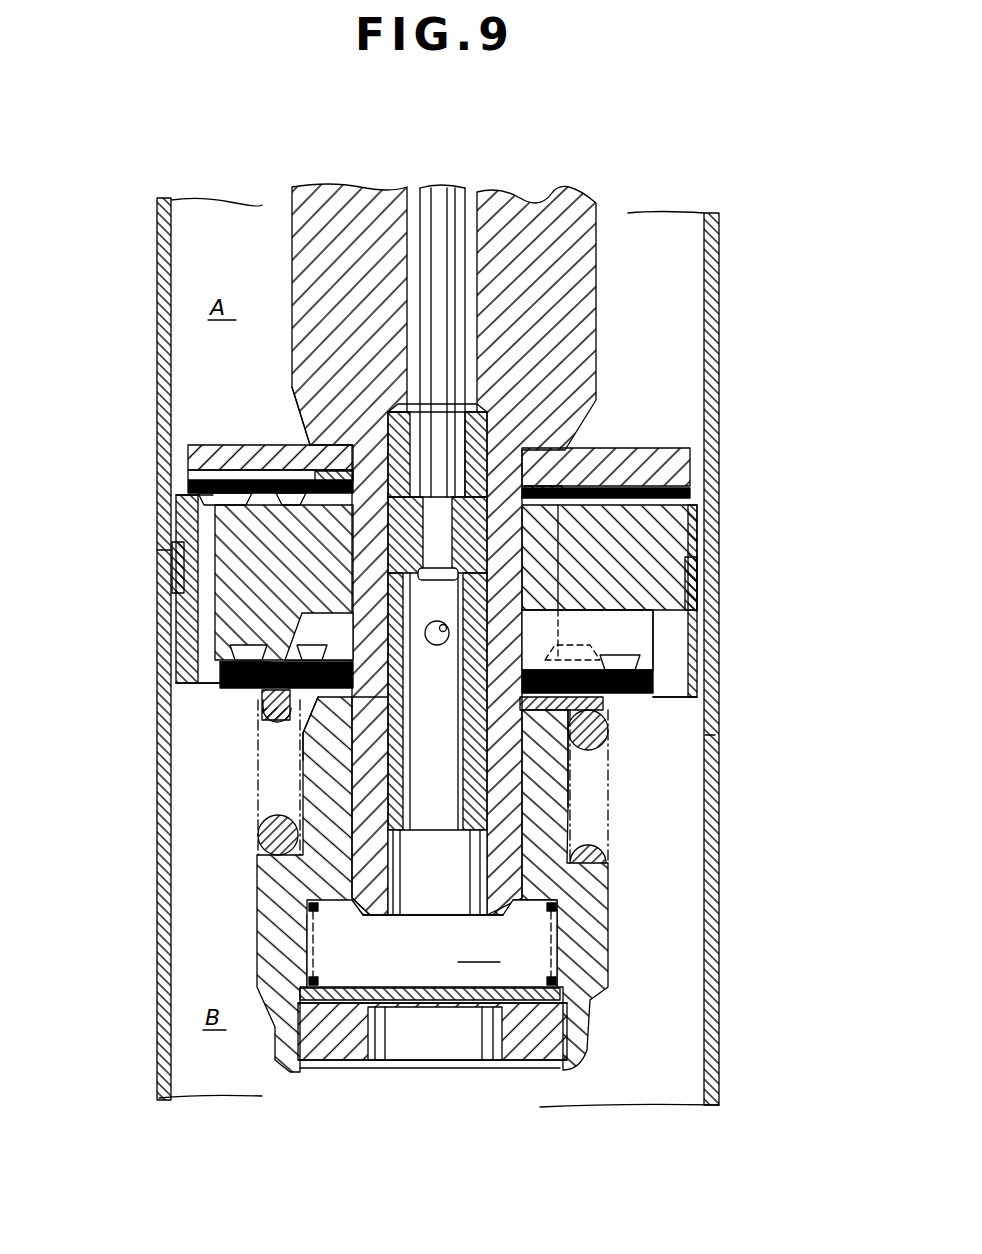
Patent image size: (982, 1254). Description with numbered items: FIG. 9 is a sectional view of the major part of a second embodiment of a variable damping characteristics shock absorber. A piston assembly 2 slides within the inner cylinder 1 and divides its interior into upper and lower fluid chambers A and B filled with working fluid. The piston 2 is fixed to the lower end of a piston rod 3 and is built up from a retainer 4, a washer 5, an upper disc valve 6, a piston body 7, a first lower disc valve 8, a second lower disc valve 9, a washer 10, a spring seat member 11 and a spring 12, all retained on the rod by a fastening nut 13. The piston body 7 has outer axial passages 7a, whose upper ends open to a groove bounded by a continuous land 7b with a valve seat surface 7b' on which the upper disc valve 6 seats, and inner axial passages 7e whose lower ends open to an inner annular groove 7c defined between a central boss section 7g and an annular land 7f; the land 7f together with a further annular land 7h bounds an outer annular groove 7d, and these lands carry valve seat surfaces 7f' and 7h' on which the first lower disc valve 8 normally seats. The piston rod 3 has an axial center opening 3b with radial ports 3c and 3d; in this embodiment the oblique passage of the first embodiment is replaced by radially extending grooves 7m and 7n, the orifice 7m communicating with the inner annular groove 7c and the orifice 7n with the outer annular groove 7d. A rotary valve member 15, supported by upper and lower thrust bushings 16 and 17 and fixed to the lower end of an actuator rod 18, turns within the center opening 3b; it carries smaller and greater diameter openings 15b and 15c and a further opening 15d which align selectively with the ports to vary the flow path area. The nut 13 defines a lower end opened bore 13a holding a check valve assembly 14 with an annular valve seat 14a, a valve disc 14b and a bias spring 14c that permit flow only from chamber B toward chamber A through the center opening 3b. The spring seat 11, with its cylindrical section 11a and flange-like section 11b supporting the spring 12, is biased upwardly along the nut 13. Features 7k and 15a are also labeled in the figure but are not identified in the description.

The inner cylinder 1 is at (724, 238).
The piston assembly 2 is at (160, 552).
The piston rod 3 is at (599, 282).
The center opening 3b is at (405, 918).
The upper ports 3c is at (258, 683).
The lower ports 3d is at (579, 635).
The retainer 4 is at (243, 470).
The washer 5 is at (312, 445).
The upper disc valve 6 is at (305, 493).
The piston body 7 is at (652, 606).
The outer axial passage 7a is at (225, 470).
The continuous land 7b is at (136, 556).
The valve seat surface 7b' is at (221, 495).
The inner annular groove 7c is at (279, 777).
The outer annular groove 7d is at (268, 700).
The inner axial passage 7e is at (700, 570).
The annular land 7f is at (482, 760).
The valve seat surface 7f' is at (222, 733).
The central boss section 7g is at (438, 645).
The annular land 7h is at (422, 606).
The valve seat surface 7h' is at (195, 717).
The upper seal face 7k is at (292, 485).
The radially extending groove 7m is at (262, 665).
The radially extending groove 7n is at (625, 637).
The first lower disc valve 8 is at (692, 699).
The second lower disc valve 9 is at (604, 704).
The washer 10 is at (560, 752).
The spring seat member 11 is at (577, 712).
The cylindrical section 11a is at (395, 743).
The flange-like section 11b is at (304, 742).
The spring 12 is at (606, 843).
The fastening nut 13 is at (258, 915).
The lower end opened bore 13a is at (432, 943).
The check valve assembly 14 is at (805, 945).
The annular valve seat 14a is at (545, 1047).
The valve disc 14b is at (560, 985).
The bias spring 14c is at (566, 998).
The rotary valve member 15 is at (542, 455).
The valve plug 15a is at (458, 709).
The smaller diameter openings 15b is at (284, 582).
The greater diameter openings 15c is at (585, 615).
The opening 15d is at (576, 548).
The upper thrust bushing 16 is at (482, 412).
The lower thrust bushing 17 is at (470, 838).
The actuator rod 18 is at (432, 268).